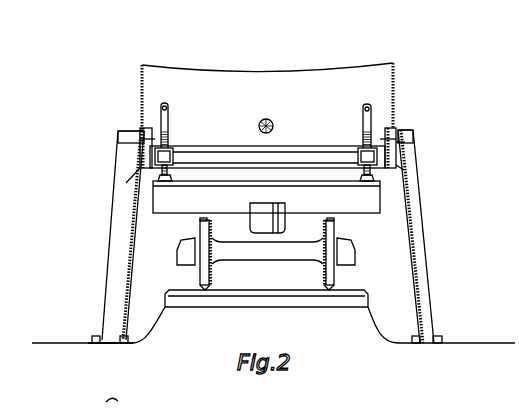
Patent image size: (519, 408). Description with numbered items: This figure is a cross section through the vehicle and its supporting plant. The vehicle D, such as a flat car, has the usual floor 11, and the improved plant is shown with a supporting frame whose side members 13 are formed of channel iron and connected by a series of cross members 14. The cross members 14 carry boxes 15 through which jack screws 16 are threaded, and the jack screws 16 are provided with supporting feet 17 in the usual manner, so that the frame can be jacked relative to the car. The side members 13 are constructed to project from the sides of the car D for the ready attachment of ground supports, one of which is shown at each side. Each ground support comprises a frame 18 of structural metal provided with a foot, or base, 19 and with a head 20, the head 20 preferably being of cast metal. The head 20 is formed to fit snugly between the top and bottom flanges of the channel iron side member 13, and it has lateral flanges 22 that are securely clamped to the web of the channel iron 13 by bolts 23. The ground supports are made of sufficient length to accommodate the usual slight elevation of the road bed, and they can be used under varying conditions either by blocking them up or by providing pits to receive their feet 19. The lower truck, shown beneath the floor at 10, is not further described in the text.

The car truck 10 is at (166, 214).
The floor 11 is at (349, 186).
The side members 13 is at (148, 156).
The cross members 14 is at (267, 157).
The boxes 15 is at (172, 158).
The jack screws 16 is at (168, 113).
The supporting feet 17 is at (167, 182).
The frame 18 is at (430, 269).
The foot 19 is at (98, 336).
The head 20 is at (138, 141).
The lateral flanges 22 is at (133, 183).
The bolts 23 is at (398, 142).